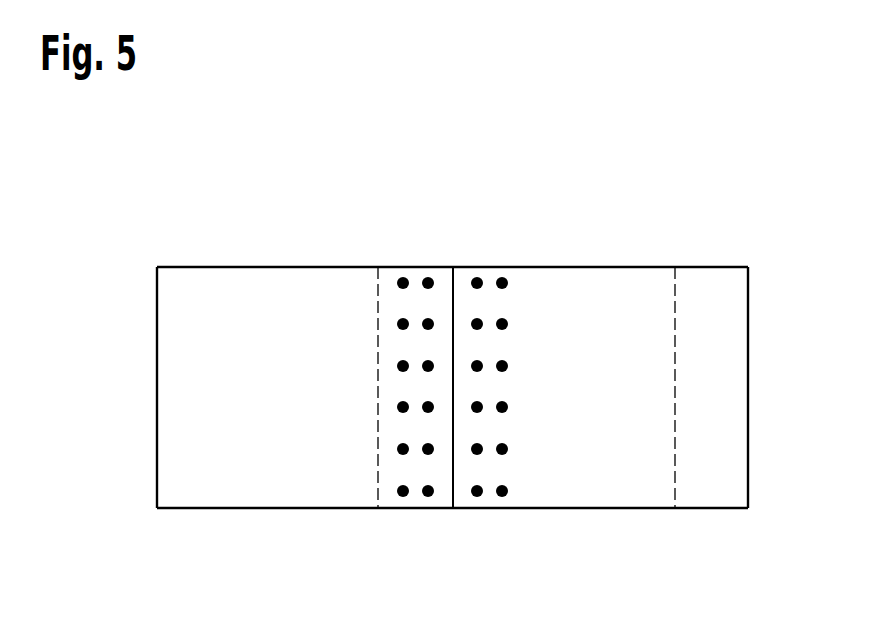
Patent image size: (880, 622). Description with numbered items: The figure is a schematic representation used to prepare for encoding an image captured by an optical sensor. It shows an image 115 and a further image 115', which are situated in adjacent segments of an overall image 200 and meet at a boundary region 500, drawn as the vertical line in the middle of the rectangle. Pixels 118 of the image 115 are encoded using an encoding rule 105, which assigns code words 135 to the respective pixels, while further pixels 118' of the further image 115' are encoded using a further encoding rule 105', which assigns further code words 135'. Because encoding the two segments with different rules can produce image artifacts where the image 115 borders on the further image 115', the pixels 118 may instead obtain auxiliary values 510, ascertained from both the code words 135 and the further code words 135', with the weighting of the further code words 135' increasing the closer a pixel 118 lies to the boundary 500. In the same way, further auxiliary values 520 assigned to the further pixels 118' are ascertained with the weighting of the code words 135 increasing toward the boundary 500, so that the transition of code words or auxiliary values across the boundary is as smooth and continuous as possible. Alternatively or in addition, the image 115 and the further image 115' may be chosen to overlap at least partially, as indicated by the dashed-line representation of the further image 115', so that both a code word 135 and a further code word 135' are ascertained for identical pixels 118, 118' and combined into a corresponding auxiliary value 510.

The overall image 200 is at (455, 361).
The encoding rule 105 is at (215, 387).
The further encoding rule 105' is at (802, 387).
The image 115 is at (267, 553).
The further image 115' is at (711, 391).
The code word 135 is at (383, 346).
The further code word 135' is at (564, 346).
The boundary region 500 is at (453, 313).
The auxiliary value 510 is at (405, 391).
The further auxiliary value 520 is at (544, 438).
The pixel 118 is at (411, 542).
The further pixel 118' is at (496, 542).